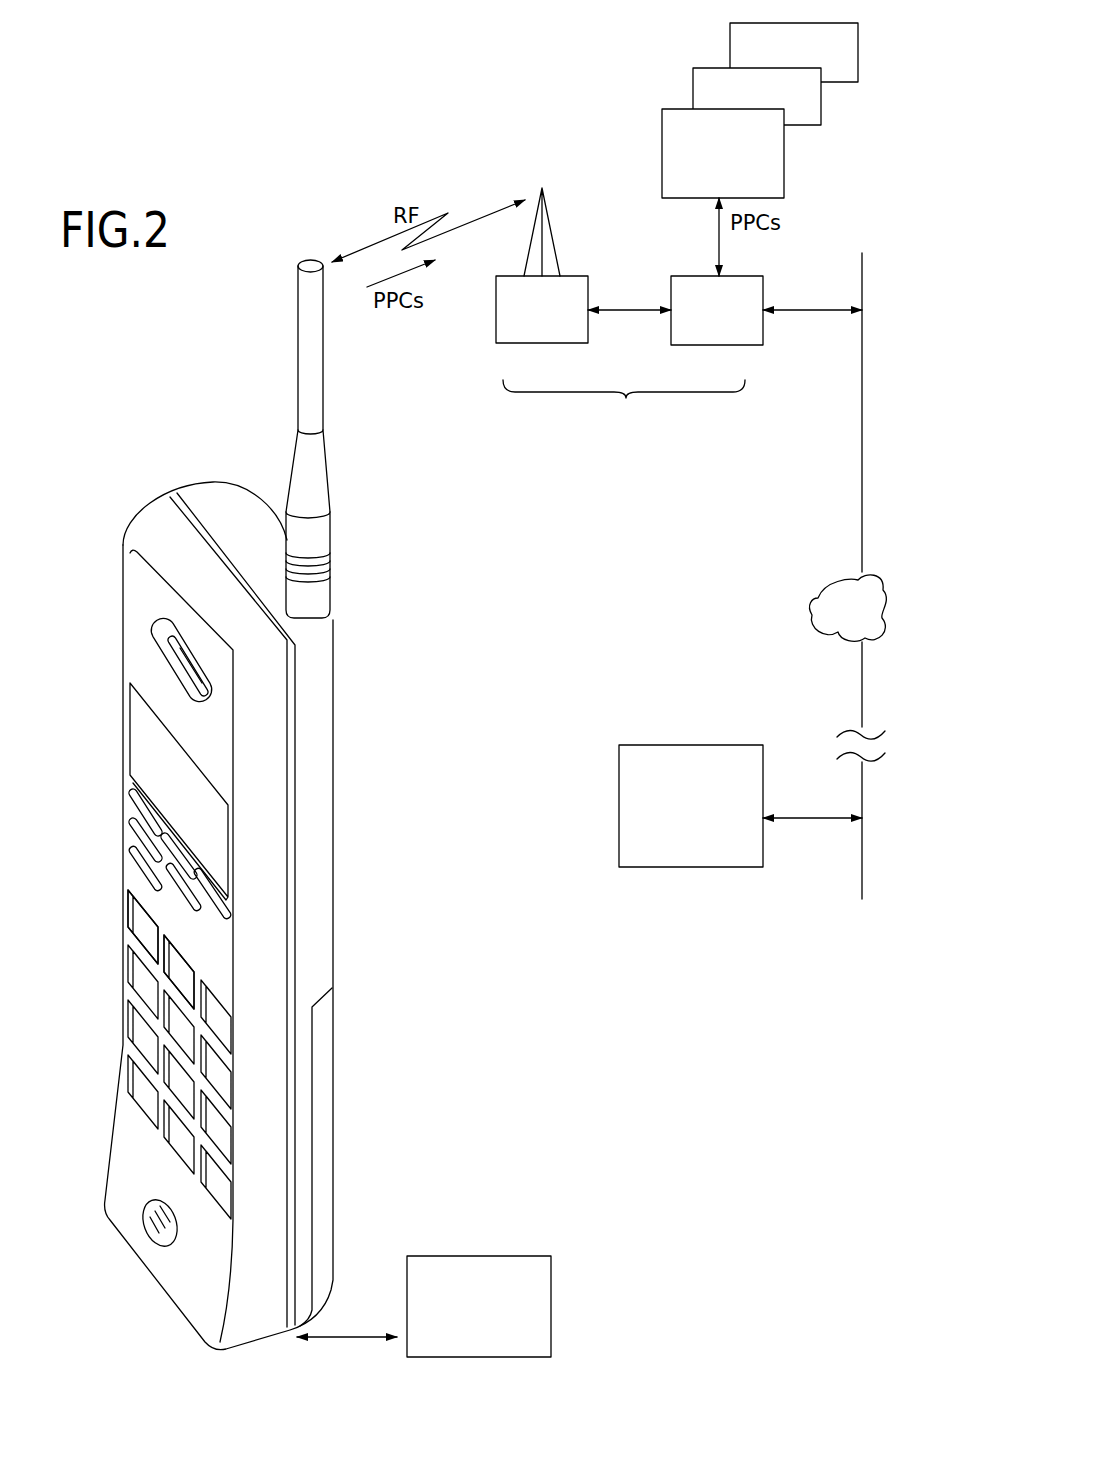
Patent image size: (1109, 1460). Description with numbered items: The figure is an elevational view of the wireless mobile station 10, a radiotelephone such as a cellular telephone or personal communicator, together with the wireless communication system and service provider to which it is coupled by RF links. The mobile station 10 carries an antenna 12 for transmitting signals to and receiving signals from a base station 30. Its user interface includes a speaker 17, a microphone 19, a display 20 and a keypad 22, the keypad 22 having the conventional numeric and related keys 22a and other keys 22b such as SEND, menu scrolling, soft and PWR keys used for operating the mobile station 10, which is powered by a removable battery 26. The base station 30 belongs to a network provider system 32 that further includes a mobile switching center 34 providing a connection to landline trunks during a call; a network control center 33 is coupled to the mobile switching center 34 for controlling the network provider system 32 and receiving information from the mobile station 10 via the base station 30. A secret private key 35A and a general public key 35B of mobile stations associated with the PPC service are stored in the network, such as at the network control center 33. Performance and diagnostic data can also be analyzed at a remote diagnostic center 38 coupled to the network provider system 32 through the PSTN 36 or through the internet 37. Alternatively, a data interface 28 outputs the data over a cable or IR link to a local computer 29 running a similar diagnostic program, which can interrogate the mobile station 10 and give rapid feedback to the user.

The mobile station 10 is at (104, 520).
The antenna 12 is at (303, 336).
The speaker 17 is at (170, 640).
The microphone 19 is at (152, 1237).
The display 20 is at (145, 748).
The keypad 22 is at (228, 1060).
The numeric and related keys 22a is at (127, 1055).
The other keys 22b is at (180, 858).
The removable battery 26 is at (328, 1123).
The data interface 28 is at (343, 1336).
The local computer 29 is at (551, 1318).
The base station 30 is at (543, 343).
The network provider system 32 is at (624, 443).
The network control center 33 is at (662, 155).
The mobile switching center 34 is at (688, 345).
The private key 35A is at (821, 103).
The general public key 35B is at (858, 52).
The Public Switched Telephone Network 36 is at (862, 510).
The internet 37 is at (818, 597).
The remote diagnostic center 38 is at (683, 867).